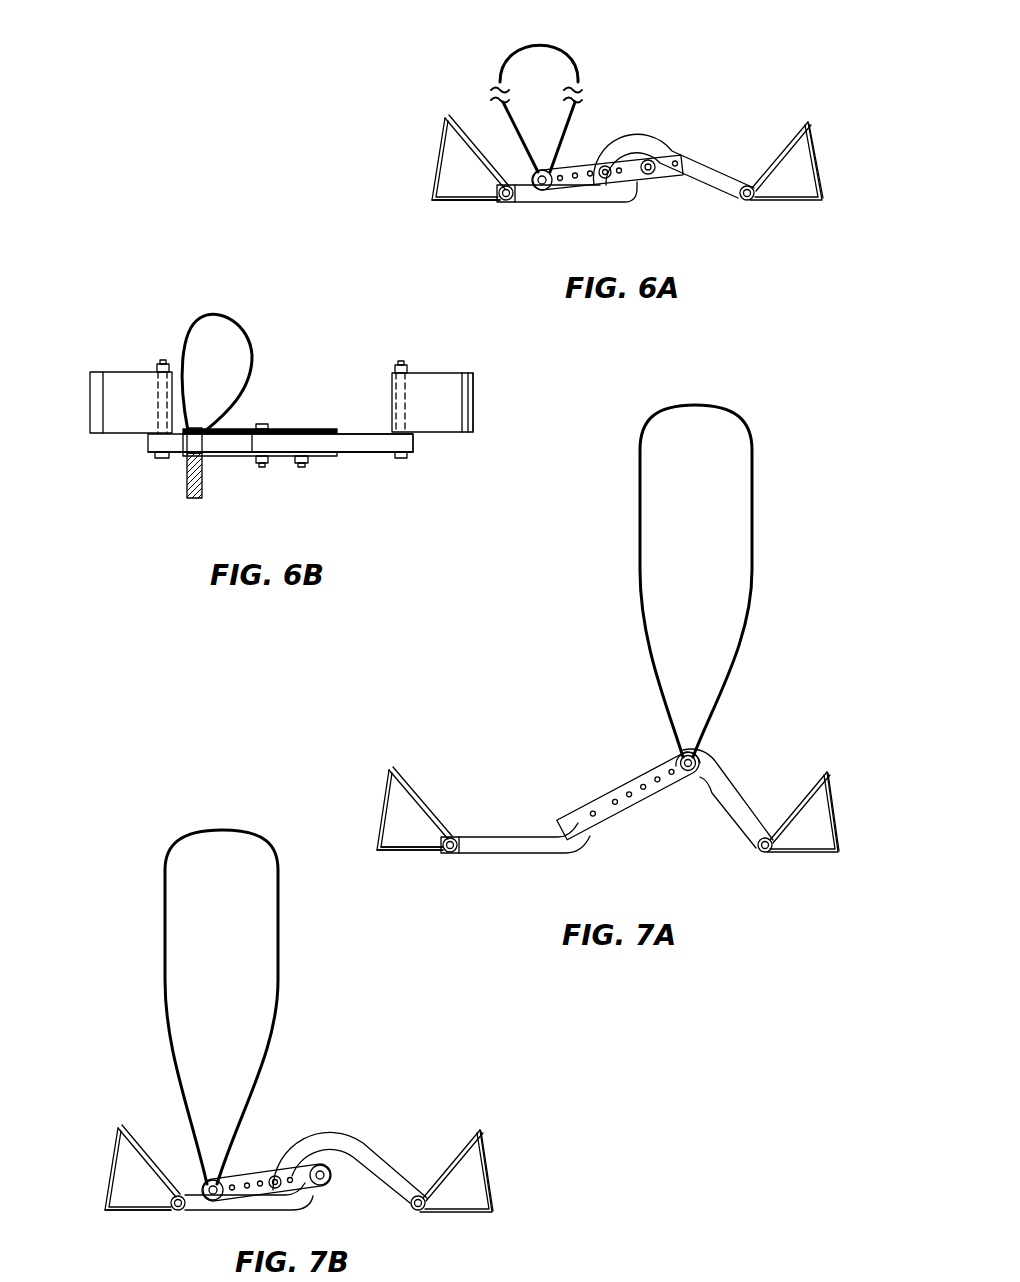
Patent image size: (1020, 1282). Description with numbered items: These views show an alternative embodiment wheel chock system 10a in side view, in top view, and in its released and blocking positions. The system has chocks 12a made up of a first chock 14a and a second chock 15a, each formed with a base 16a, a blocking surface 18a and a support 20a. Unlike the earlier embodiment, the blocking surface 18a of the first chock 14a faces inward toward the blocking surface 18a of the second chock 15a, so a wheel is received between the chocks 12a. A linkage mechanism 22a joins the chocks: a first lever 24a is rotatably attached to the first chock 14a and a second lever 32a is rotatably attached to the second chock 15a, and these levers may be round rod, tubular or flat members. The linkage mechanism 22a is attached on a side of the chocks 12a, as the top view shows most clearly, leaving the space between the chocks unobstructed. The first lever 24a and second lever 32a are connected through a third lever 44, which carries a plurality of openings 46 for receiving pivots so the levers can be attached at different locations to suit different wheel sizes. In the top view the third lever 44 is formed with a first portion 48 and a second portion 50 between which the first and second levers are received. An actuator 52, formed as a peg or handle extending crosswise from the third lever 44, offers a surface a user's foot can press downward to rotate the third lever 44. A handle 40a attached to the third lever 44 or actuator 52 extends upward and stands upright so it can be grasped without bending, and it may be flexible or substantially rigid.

In FIG. 6A, the wheel chock system 10a is at (693, 75).
In FIG. 6B, the wheel chock system 10a is at (292, 327).
In FIG. 7A, the wheel chock system 10a is at (802, 487).
In FIG. 7B, the wheel chock system 10a is at (308, 1021).
In FIG. 6A, the chocks 12a is at (808, 163).
In FIG. 6B, the chocks 12a is at (474, 421).
In FIG. 7A, the chocks 12a is at (840, 831).
In FIG. 7B, the chocks 12a is at (493, 1191).
In FIG. 6A, the first chock 14a is at (430, 165).
In FIG. 6B, the first chock 14a is at (97, 393).
In FIG. 7A, the first chock 14a is at (380, 806).
In FIG. 7B, the first chock 14a is at (110, 1151).
In FIG. 6A, the second chock 15a is at (806, 191).
In FIG. 6B, the second chock 15a is at (474, 393).
In FIG. 7A, the second chock 15a is at (832, 801).
In FIG. 7B, the second chock 15a is at (490, 1171).
In FIG. 6A, the base 16a is at (470, 206).
In FIG. 7A, the base 16a is at (400, 853).
In FIG. 6A, the blocking surface 18a is at (470, 138).
In FIG. 7A, the blocking surface 18a is at (418, 801).
In FIG. 6A, the support 20a is at (818, 133).
In FIG. 6A, the linkage mechanism 22a is at (640, 192).
In FIG. 6B, the linkage mechanism 22a is at (280, 459).
In FIG. 7A, the linkage mechanism 22a is at (640, 798).
In FIG. 7B, the linkage mechanism 22a is at (310, 1161).
In FIG. 6A, the first lever 24a is at (597, 205).
In FIG. 6B, the first lever 24a is at (150, 441).
In FIG. 7A, the first lever 24a is at (515, 838).
In FIG. 7B, the first lever 24a is at (242, 1196).
In FIG. 6A, the second lever 32a is at (690, 160).
In FIG. 6B, the second lever 32a is at (365, 446).
In FIG. 7A, the second lever 32a is at (738, 789).
In FIG. 7B, the second lever 32a is at (375, 1156).
In FIG. 6A, the handle 40a is at (560, 47).
In FIG. 6B, the handle 40a is at (221, 316).
In FIG. 7A, the handle 40a is at (735, 416).
In FIG. 7B, the handle 40a is at (168, 873).
In FIG. 6A, the third lever 44 is at (648, 160).
In FIG. 6B, the third lever 44 is at (222, 459).
In FIG. 7A, the third lever 44 is at (600, 829).
In FIG. 6A, the openings 46 is at (580, 172).
In FIG. 6B, the first portion 48 is at (330, 457).
In FIG. 6B, the second portion 50 is at (284, 431).
In FIG. 6A, the actuator 52 is at (540, 192).
In FIG. 6B, the actuator 52 is at (185, 481).